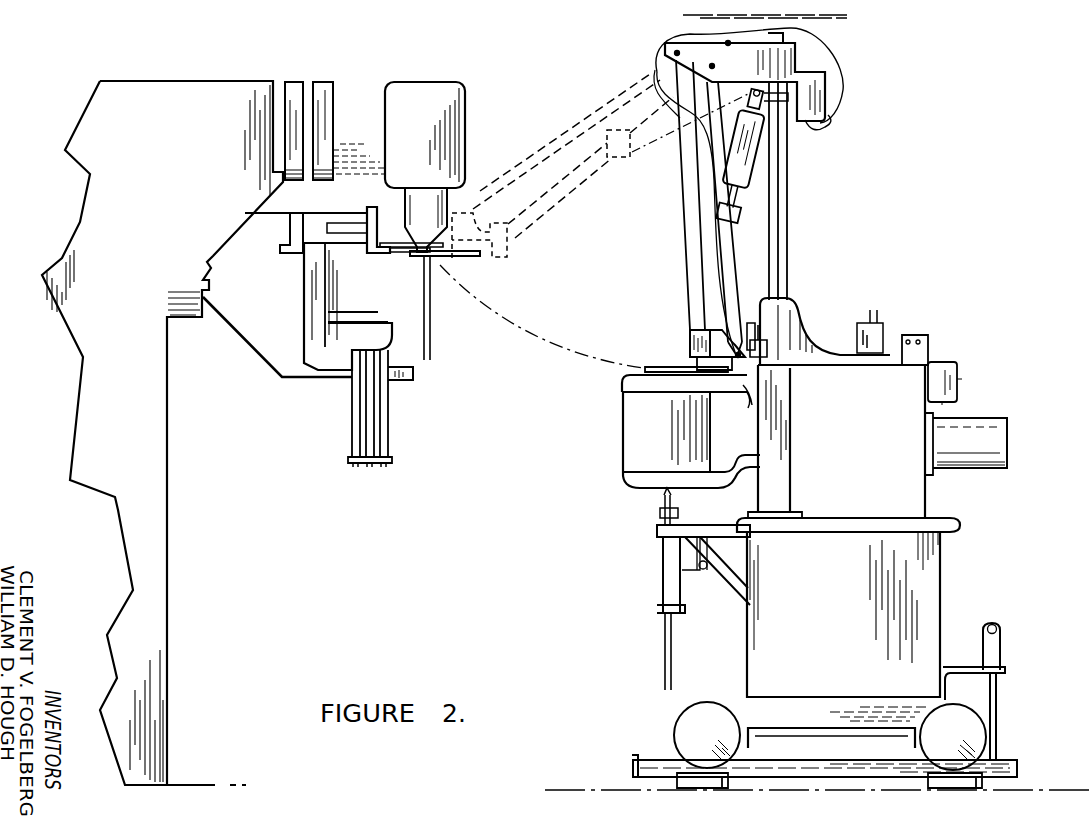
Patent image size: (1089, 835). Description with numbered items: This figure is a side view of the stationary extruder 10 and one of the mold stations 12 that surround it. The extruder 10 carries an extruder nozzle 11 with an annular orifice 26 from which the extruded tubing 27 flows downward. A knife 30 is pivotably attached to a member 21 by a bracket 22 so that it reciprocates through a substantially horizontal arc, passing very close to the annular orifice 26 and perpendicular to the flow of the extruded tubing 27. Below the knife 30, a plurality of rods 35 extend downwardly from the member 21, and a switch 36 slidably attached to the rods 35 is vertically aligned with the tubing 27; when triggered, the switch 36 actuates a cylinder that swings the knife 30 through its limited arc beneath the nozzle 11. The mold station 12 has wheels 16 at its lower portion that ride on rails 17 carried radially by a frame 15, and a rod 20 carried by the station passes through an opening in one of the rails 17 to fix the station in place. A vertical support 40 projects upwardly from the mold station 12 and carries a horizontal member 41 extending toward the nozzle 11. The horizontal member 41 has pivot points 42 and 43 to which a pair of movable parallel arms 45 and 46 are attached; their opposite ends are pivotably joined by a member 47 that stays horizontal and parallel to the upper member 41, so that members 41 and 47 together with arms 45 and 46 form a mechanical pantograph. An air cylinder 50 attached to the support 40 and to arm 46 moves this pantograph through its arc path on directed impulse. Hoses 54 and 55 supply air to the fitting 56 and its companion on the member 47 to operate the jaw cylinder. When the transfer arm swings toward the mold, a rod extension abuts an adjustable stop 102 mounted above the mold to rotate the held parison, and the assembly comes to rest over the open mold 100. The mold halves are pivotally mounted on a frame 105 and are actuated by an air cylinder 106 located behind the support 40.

The stationary extruder 10 is at (166, 181).
The extruder nozzle 11 is at (412, 129).
The mold station 12 is at (860, 463).
The frame 15 is at (730, 782).
The wheels 16 is at (717, 734).
The rails 17 is at (1017, 766).
The rod 20 is at (995, 699).
The member 21 is at (310, 280).
The bracket 22 is at (378, 222).
The annular orifice 26 is at (420, 258).
The extruded tubing 27 is at (432, 332).
The knife 30 is at (395, 251).
The rods 35 is at (388, 428).
The switch 36 is at (405, 380).
The vertical support 40 is at (780, 228).
The horizontal member 41 is at (752, 74).
The pivot point 42 is at (712, 64).
The pivot point 43 is at (676, 52).
The movable parallel arm 45 is at (722, 274).
The movable parallel arm 46 is at (688, 244).
The member 47 is at (690, 337).
The air cylinder 50 is at (757, 152).
The hose 54 is at (828, 127).
The hose 55 is at (842, 98).
The fitting 56 is at (736, 352).
The open mold 100 is at (661, 431).
The adjustable stop 102 is at (753, 388).
The frame 105 is at (797, 316).
The air cylinder 106 is at (986, 453).